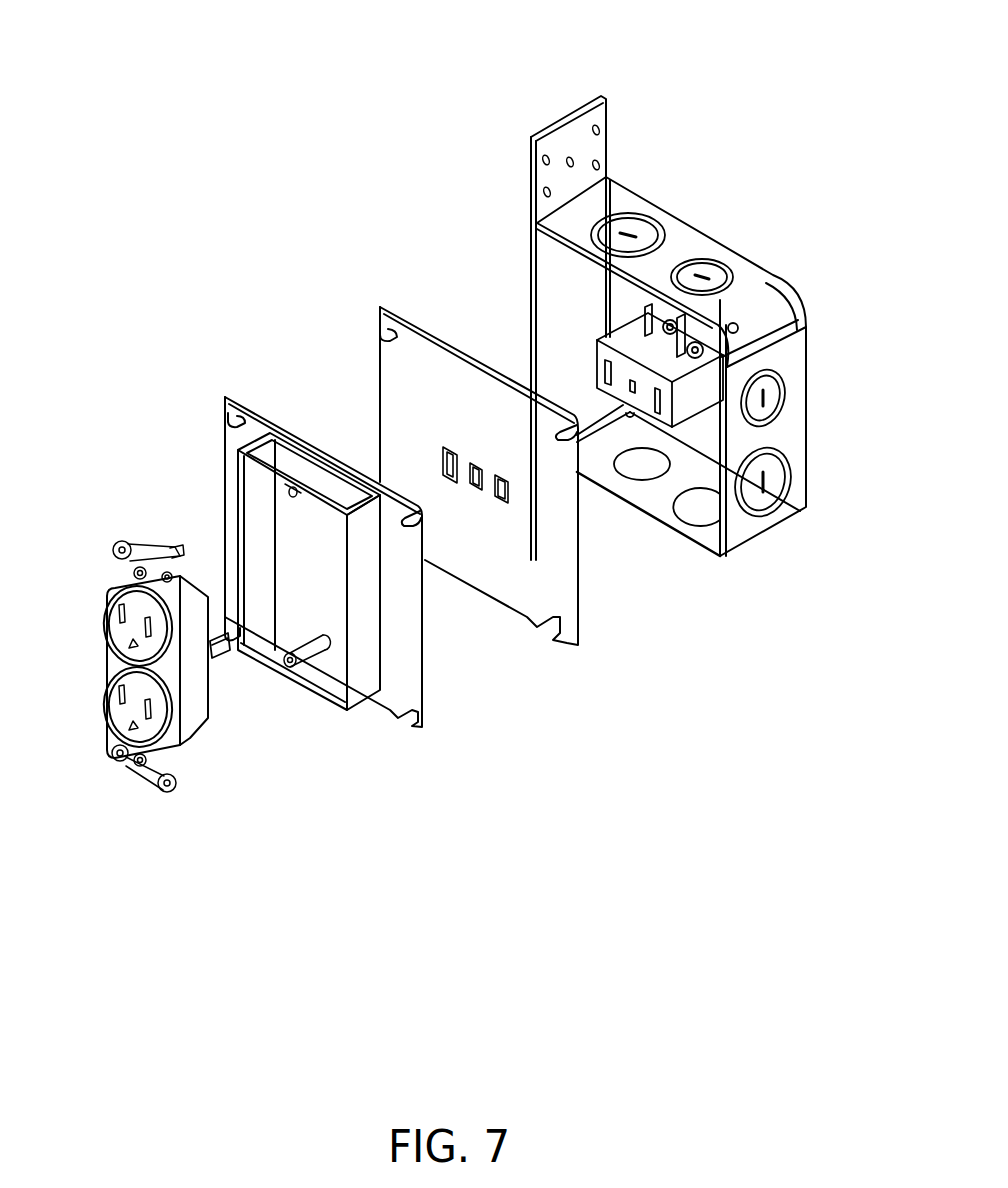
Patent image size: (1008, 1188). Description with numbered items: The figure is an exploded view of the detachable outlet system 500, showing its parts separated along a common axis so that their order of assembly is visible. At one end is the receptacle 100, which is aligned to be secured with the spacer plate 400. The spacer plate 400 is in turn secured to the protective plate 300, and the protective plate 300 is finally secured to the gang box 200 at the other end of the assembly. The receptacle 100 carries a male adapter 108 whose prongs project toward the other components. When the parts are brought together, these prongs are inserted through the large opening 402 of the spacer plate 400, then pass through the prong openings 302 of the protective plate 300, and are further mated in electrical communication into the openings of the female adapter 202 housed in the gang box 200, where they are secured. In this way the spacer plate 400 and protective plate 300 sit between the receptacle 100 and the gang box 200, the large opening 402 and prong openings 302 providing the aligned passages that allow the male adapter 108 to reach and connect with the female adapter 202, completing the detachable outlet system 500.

The receptacle 100 is at (200, 740).
The male adapter 108 is at (218, 655).
The gang box 200 is at (790, 500).
The female adapter 202 is at (650, 353).
The protective plate 300 is at (442, 553).
The prong openings 302 is at (443, 457).
The spacer plate 400 is at (405, 673).
The large opening 402 is at (310, 567).
The detachable outlet system 500 is at (690, 107).